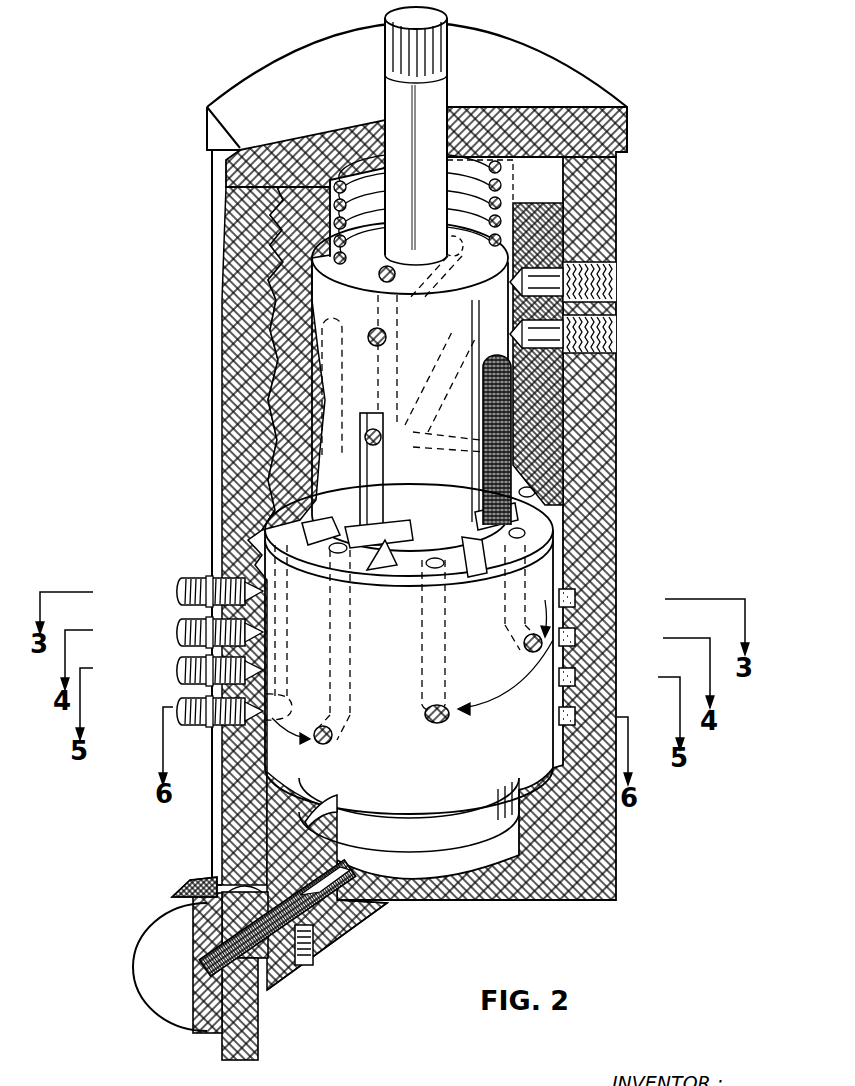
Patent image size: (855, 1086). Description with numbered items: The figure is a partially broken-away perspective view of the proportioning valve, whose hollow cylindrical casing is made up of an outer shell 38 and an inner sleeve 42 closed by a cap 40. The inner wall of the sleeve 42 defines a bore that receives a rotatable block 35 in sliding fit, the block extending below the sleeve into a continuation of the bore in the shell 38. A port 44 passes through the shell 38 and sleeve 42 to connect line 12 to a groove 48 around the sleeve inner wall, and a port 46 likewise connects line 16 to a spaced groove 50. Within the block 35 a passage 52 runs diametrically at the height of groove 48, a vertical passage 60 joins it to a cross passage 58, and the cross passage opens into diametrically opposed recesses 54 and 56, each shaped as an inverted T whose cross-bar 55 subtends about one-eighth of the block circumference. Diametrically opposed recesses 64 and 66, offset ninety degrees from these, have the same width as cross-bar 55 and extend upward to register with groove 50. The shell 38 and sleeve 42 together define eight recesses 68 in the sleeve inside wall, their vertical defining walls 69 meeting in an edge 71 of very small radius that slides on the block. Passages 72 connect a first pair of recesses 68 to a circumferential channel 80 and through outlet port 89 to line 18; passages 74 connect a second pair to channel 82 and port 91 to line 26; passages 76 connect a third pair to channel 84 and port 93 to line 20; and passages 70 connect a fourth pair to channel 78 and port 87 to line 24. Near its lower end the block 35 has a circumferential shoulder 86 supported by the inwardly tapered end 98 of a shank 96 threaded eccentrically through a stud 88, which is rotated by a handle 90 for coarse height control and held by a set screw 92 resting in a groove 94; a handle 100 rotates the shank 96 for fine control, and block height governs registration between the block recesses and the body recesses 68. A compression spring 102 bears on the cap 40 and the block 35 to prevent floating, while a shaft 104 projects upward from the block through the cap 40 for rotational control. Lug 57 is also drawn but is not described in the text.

The line 12 is at (634, 283).
The line 16 is at (634, 337).
The line 18 is at (178, 633).
The line 20 is at (178, 711).
The line 24 is at (178, 591).
The line 26 is at (178, 672).
The rotatable block 35 is at (446, 268).
The outer shell 38 is at (605, 478).
The cap 40 is at (612, 142).
The inner sleeve 42 is at (560, 225).
The port 44 is at (566, 263).
The port 46 is at (588, 340).
The groove 48 is at (518, 283).
The groove 50 is at (518, 335).
The passage 52 is at (418, 286).
The recess 54 is at (383, 462).
The cross-bar 55 is at (388, 530).
The recess 56 is at (400, 332).
The lug 57 is at (368, 556).
The cross passage 58 is at (425, 393).
The vertical passage 60 is at (375, 360).
The recess 64 is at (490, 473).
The recess 66 is at (315, 352).
The recess 68 is at (495, 535).
The vertical defining wall 69 is at (470, 555).
The passage 70 is at (512, 605).
The edge 71 is at (325, 525).
The passage 72 is at (440, 628).
The passage 74 is at (340, 625).
The passage 76 is at (262, 540).
The circumferential channel 78 is at (578, 597).
The circumferential channel 80 is at (578, 637).
The circumferential channel 82 is at (578, 676).
The circumferential channel 84 is at (578, 715).
The circumferential shoulder 86 is at (466, 858).
The port 87 is at (205, 585).
The stud 88 is at (280, 862).
The outlet port 89 is at (210, 628).
The handle 90 is at (258, 1020).
The port 91 is at (208, 668).
The set screw 92 is at (313, 942).
The port 93 is at (208, 707).
The groove 94 is at (310, 830).
The shank 96 is at (340, 905).
The inwardly tapered end 98 is at (345, 868).
The handle 100 is at (210, 1020).
The compression spring 102 is at (332, 213).
The shaft 104 is at (442, 14).